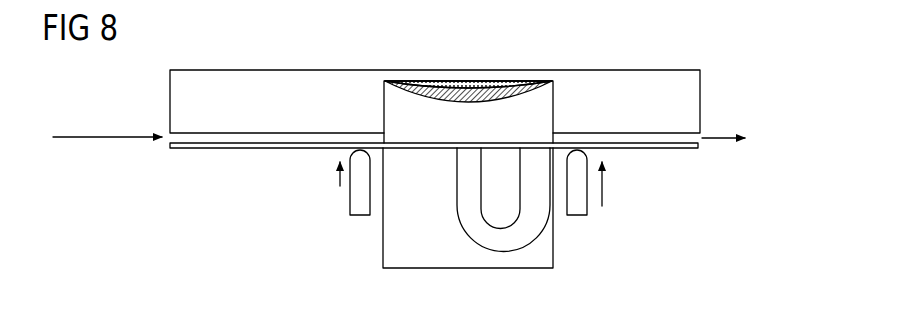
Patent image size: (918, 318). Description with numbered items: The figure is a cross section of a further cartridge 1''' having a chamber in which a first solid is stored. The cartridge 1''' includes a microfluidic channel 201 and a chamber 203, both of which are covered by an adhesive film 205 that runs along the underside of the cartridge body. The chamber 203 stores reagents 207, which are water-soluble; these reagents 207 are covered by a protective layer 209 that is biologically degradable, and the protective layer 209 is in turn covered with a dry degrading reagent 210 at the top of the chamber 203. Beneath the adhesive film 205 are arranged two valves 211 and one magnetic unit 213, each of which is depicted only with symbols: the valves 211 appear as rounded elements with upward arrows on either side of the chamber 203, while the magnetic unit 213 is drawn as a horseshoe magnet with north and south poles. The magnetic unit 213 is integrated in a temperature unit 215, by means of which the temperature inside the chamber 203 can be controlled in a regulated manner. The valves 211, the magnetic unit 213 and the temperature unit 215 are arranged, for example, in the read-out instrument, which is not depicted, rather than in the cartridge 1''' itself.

The cartridge 1''' is at (406, 104).
The microfluidic channel 201 is at (190, 137).
The chamber 203 is at (533, 108).
The adhesive film 205 is at (262, 143).
The reagents 207 is at (487, 82).
The protective layer 209 is at (424, 81).
The dry degrading reagent 210 is at (534, 84).
The valves 211 is at (358, 209).
The magnetic unit 213 is at (528, 209).
The temperature unit 215 is at (518, 260).